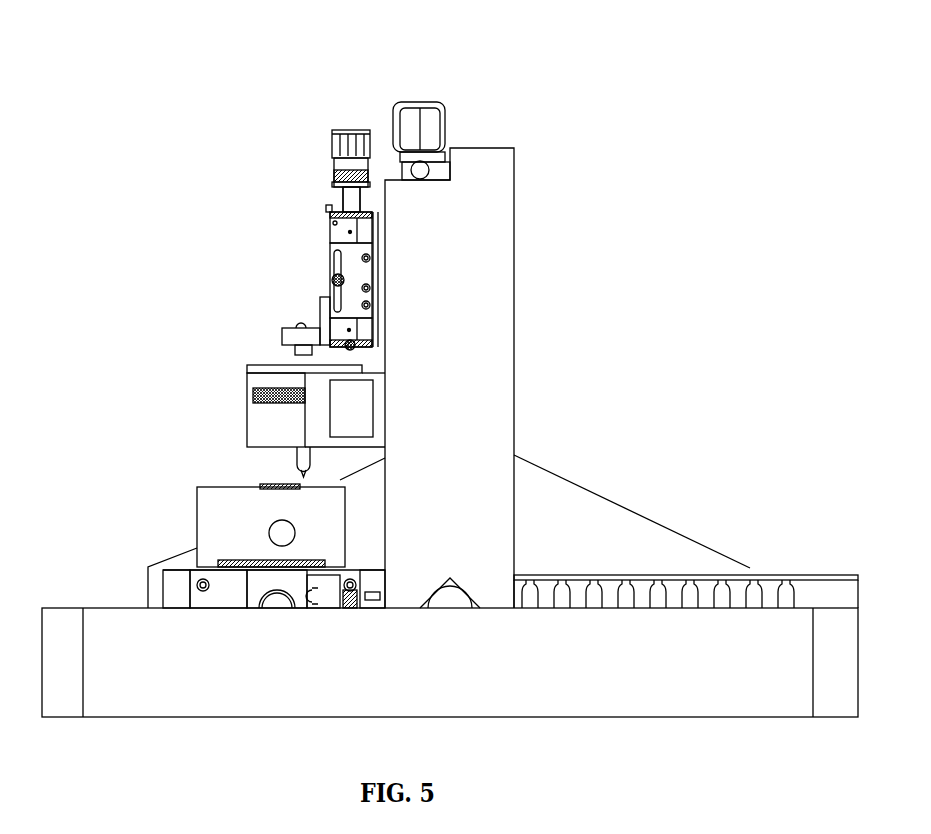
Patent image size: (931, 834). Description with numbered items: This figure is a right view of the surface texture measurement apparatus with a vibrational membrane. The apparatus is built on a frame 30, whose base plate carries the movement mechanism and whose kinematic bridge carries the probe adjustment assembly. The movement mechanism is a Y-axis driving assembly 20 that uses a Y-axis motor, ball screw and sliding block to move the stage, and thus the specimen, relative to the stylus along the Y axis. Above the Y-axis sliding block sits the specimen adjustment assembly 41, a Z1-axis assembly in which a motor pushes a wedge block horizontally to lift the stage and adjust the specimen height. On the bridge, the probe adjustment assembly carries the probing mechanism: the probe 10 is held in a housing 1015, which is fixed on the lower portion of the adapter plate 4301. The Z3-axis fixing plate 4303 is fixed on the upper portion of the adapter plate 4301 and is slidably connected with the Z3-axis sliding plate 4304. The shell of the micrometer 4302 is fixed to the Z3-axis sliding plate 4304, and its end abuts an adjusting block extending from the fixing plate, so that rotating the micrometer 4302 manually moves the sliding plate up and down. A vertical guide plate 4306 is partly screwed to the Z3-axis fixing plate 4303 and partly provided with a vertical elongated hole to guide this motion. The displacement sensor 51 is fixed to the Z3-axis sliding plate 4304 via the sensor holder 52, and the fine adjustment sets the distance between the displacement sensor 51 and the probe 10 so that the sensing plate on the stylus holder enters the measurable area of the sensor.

The probe 10 is at (198, 359).
The housing 1015 is at (158, 367).
The Y-axis driving assembly 20 is at (435, 594).
The frame 30 is at (478, 313).
The specimen adjustment assembly 41 is at (199, 478).
The displacement sensor 51 is at (527, 296).
The sensor holder 52 is at (187, 272).
The adapter plate 4301 is at (615, 410).
The micrometer 4302 is at (207, 129).
The Z3-axis fixing plate 4303 is at (534, 135).
The Z3-axis sliding plate 4304 is at (208, 190).
The vertical guide plate 4306 is at (527, 231).